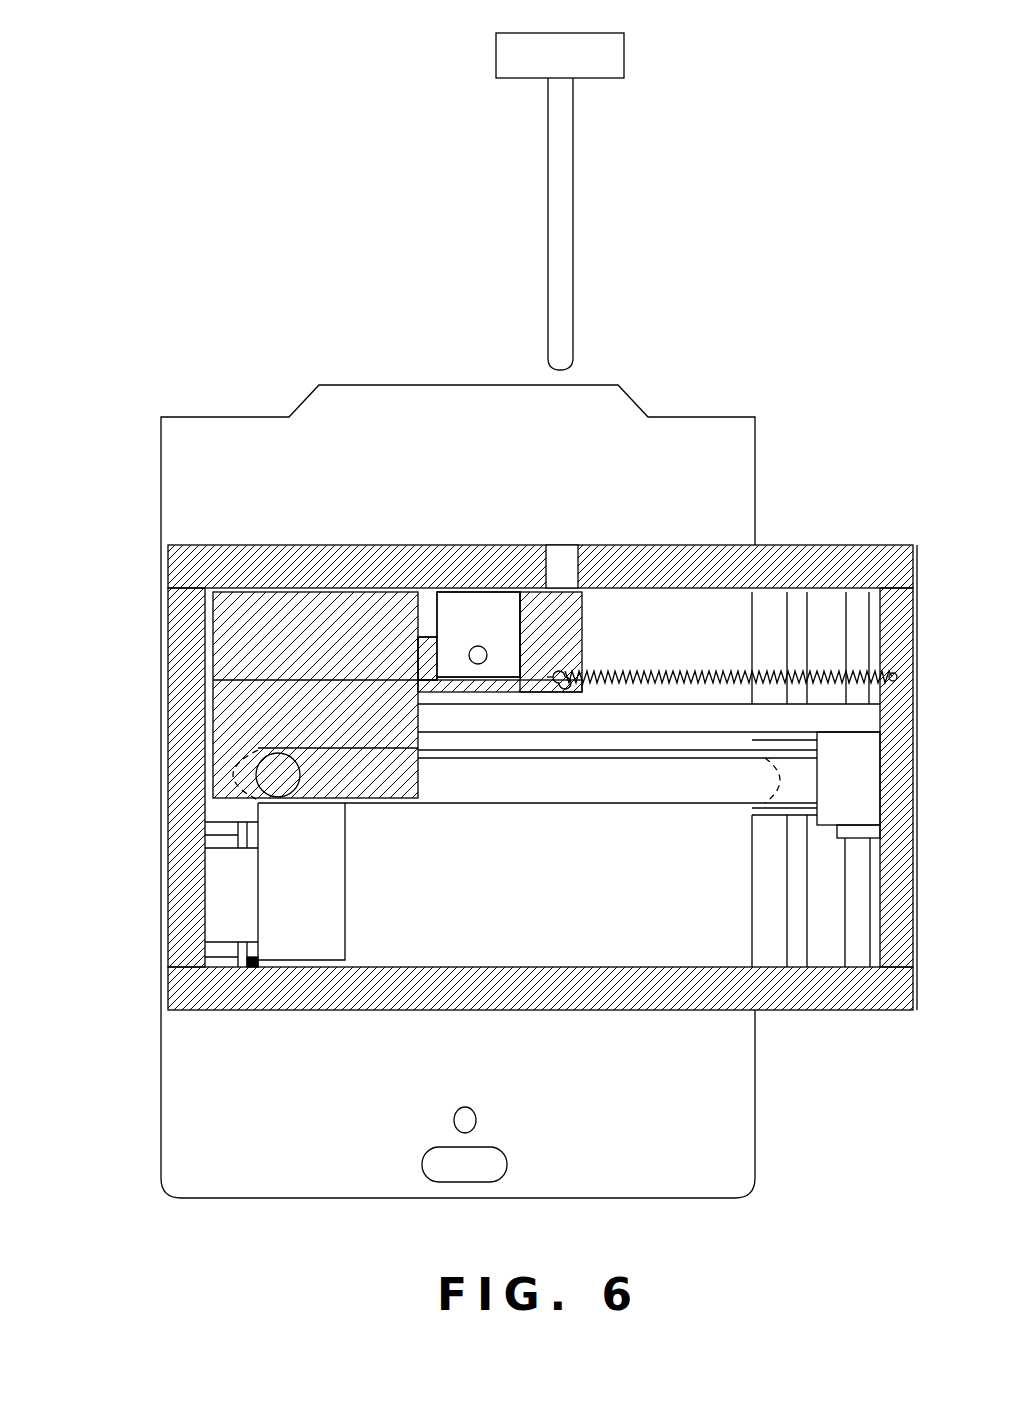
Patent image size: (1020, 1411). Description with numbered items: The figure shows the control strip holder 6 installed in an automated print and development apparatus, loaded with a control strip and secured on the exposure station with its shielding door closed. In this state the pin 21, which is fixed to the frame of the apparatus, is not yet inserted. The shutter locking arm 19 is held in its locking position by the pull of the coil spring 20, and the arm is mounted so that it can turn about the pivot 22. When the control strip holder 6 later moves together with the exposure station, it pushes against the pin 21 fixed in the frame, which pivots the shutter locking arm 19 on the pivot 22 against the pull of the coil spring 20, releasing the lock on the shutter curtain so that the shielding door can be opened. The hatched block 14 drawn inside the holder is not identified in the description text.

The housing 6 is at (220, 417).
The movable block 14 is at (267, 643).
The frame 19 is at (596, 568).
The spring 20 is at (695, 675).
The operating rod 21 is at (573, 142).
The pin 22 is at (478, 646).